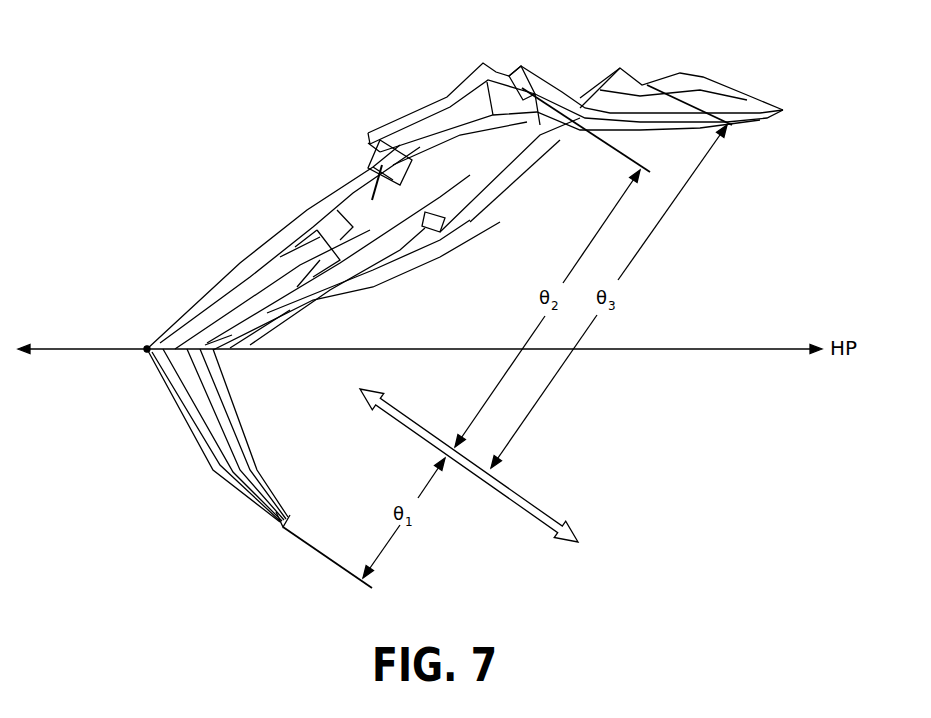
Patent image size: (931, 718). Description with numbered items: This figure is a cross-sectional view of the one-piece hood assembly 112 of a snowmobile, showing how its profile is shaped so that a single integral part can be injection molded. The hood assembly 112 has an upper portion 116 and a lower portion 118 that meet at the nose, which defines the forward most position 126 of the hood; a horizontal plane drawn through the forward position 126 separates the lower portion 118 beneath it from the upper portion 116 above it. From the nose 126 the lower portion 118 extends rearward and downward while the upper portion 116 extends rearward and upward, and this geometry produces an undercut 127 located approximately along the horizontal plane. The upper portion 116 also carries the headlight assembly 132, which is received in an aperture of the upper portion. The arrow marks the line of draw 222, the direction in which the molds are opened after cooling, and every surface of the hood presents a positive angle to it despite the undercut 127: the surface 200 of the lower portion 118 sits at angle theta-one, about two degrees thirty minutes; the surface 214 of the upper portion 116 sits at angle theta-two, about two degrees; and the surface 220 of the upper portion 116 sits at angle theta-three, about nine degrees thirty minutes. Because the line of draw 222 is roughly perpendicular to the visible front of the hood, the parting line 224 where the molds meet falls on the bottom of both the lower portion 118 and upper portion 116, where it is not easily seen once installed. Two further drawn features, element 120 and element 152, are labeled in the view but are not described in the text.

The one-piece hood assembly 112 is at (138, 163).
The upper portion 116 is at (236, 262).
The lower portion 118 is at (190, 438).
The seat frame 120 is at (447, 93).
The forward most position 126 is at (147, 345).
The undercut 127 is at (218, 340).
The headlight assembly 132 is at (378, 168).
The recliner link 152 is at (432, 217).
The surface 200 is at (275, 514).
The surface 214 is at (525, 86).
The surface 220 is at (662, 144).
The line of draw 222 is at (516, 506).
The parting line 224 is at (282, 521).